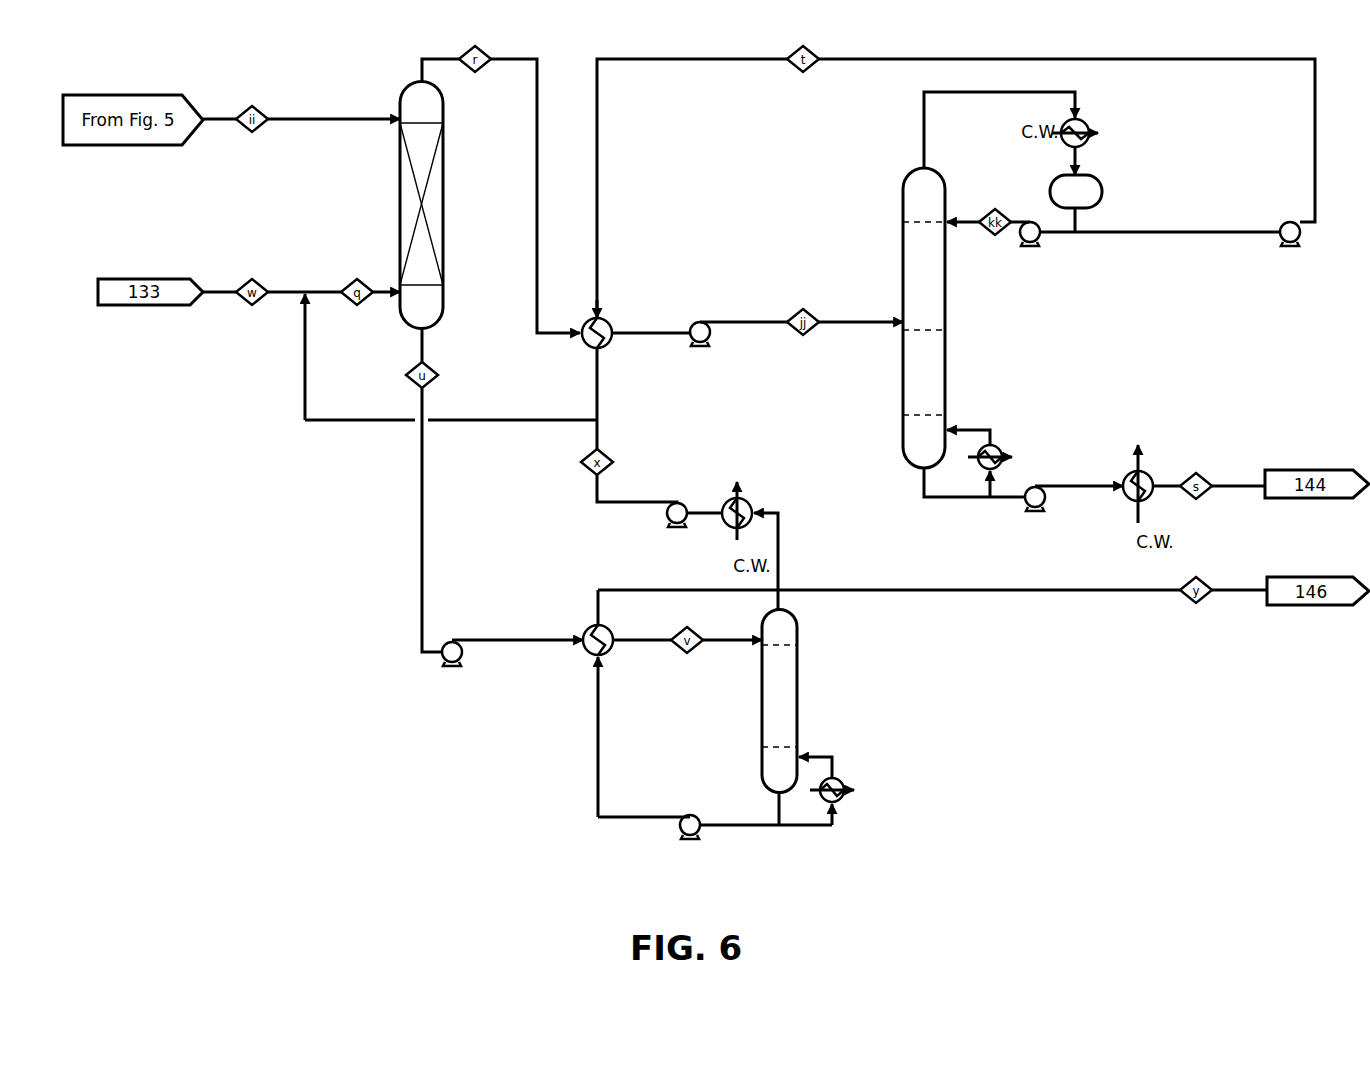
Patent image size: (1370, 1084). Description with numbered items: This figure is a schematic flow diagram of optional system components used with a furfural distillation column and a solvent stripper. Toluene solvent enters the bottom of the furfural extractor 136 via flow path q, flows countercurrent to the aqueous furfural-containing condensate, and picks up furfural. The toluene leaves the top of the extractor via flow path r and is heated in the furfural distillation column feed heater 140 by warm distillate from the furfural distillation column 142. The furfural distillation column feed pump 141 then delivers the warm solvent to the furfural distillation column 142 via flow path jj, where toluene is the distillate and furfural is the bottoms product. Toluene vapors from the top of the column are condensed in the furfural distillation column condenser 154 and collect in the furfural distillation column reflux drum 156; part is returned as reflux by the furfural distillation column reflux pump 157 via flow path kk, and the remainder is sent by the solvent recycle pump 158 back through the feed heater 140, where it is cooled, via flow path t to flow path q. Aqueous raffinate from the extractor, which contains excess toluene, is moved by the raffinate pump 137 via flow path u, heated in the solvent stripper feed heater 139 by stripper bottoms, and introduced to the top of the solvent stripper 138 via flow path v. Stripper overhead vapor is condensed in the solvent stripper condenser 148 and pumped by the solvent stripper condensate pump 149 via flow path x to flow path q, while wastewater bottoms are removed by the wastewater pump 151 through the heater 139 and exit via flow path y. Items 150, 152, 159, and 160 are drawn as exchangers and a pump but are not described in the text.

The furfural extractor 136 is at (400, 163).
The raffinate pump 137 is at (455, 638).
The solvent stripper 138 is at (762, 707).
The solvent stripper feed heater 139 is at (585, 655).
The furfural distillation column feed heater 140 is at (592, 350).
The furfural distillation column feed pump 141 is at (698, 322).
The furfural distillation column 142 is at (903, 268).
The solvent stripper condenser 148 is at (744, 502).
The solvent stripper condensate pump 149 is at (672, 502).
The reboiler 150 is at (845, 798).
The wastewater pump 151 is at (688, 814).
The reboiler 152 is at (1000, 446).
The furfural distillation column condenser 154 is at (1090, 122).
The furfural distillation column reflux drum 156 is at (1102, 193).
The furfural distillation column reflux pump 157 is at (1030, 247).
The solvent recycle pump 158 is at (1288, 247).
The pump 159 is at (1033, 512).
The cooler 160 is at (1155, 475).